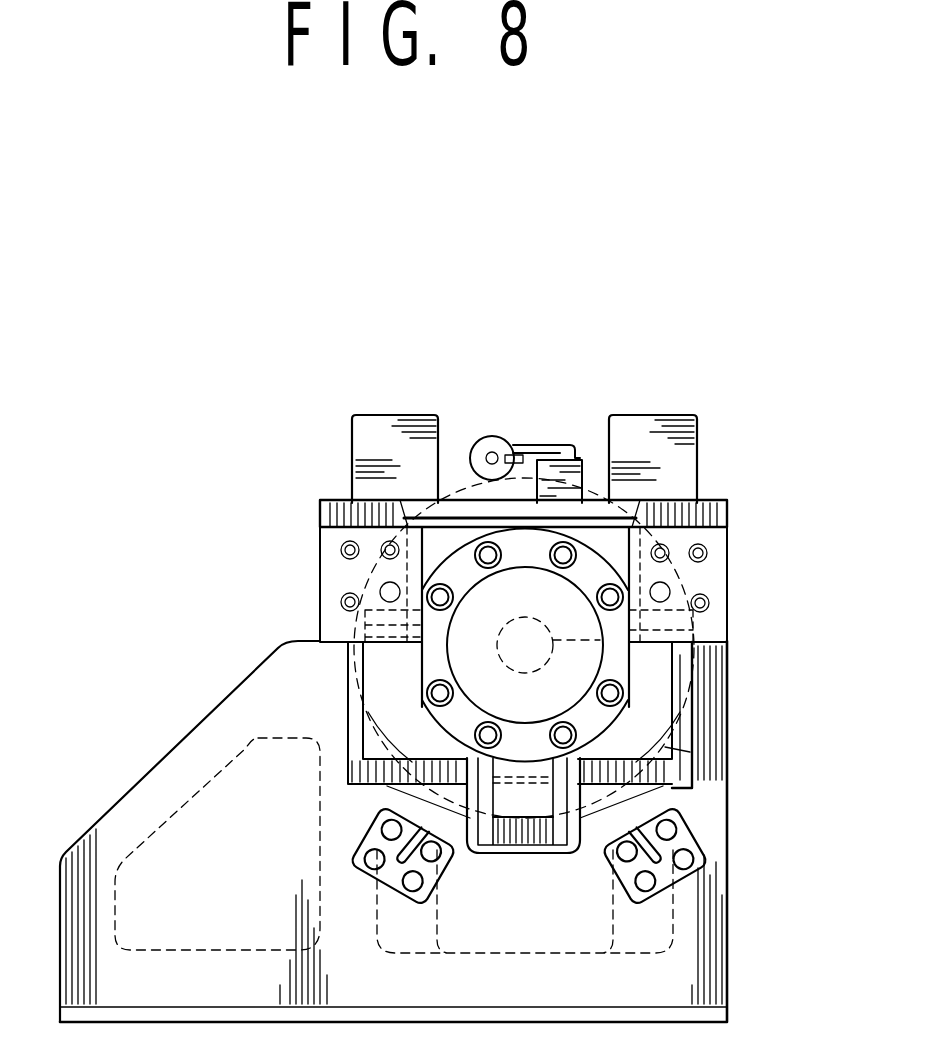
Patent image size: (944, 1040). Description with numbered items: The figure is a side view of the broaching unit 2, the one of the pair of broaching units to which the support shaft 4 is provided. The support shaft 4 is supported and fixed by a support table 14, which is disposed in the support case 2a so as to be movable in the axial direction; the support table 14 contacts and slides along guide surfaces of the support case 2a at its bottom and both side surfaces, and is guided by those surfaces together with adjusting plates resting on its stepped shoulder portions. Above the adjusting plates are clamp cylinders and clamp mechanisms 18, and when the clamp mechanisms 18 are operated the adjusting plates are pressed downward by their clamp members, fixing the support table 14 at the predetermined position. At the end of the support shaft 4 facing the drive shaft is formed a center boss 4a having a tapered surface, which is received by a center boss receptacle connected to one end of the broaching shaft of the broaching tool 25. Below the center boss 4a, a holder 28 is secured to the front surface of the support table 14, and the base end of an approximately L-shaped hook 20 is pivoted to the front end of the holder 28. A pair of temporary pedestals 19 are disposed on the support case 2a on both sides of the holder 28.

The broaching unit 2 is at (147, 772).
The support case 2a is at (695, 977).
The support shaft 4 is at (703, 606).
The center boss 4a is at (567, 588).
The support table 14 is at (385, 698).
The clamp mechanism 18 is at (397, 433).
The temporary pedestal 19 is at (385, 805).
The hook 20 is at (543, 853).
The broaching tool 25 is at (725, 668).
The holder 28 is at (690, 753).